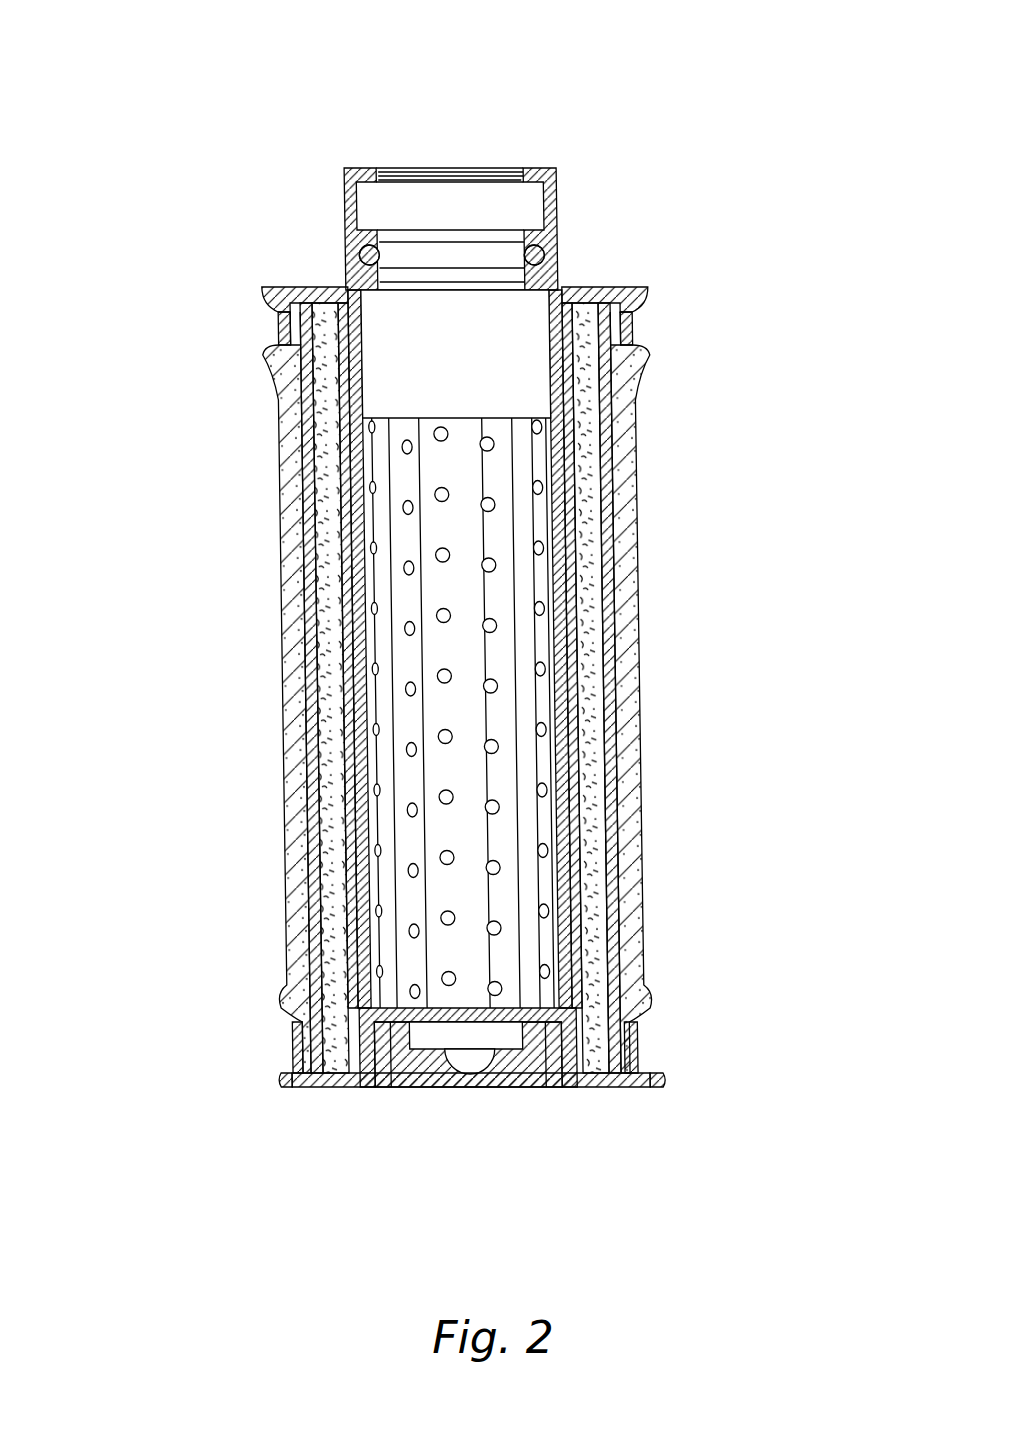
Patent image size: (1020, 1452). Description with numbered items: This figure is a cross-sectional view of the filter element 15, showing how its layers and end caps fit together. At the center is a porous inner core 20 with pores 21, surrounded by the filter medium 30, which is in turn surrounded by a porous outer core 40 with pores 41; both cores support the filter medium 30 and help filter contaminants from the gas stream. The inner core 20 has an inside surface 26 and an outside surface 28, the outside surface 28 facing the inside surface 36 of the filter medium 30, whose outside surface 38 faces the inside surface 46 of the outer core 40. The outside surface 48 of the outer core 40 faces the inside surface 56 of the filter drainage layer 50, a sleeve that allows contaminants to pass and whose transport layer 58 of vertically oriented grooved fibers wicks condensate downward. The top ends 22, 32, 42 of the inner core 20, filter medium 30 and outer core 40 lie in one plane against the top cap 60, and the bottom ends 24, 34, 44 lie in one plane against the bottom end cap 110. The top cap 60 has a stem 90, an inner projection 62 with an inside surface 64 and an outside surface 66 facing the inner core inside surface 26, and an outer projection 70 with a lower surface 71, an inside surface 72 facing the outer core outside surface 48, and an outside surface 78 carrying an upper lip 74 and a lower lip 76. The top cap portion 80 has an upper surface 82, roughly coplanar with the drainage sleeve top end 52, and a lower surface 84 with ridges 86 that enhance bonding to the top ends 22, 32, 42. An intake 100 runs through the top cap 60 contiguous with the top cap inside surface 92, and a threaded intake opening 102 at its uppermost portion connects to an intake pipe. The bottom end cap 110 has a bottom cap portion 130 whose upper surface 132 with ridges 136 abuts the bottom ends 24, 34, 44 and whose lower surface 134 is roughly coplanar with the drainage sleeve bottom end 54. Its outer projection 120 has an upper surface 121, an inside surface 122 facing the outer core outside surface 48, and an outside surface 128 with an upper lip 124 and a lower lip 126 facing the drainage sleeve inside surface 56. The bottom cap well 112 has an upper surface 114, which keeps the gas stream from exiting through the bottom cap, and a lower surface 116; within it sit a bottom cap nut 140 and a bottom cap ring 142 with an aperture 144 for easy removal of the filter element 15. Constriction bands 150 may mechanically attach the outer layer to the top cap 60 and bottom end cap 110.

The filter element 15 is at (684, 108).
The porous inner core 20 is at (577, 690).
The pores 21 is at (594, 885).
The top end of inner core 22 is at (578, 285).
The bottom end of inner core 24 is at (566, 1092).
The inside surface of inner core 26 is at (614, 490).
The outside surface of inner core 28 is at (590, 830).
The filter medium 30 is at (600, 420).
The top end of filter medium 32 is at (603, 290).
The bottom end of filter medium 34 is at (587, 1092).
The inside surface of filter medium 36 is at (623, 560).
The outside surface of filter medium 38 is at (606, 715).
The porous outer core 40 is at (308, 597).
The pores 41 is at (298, 410).
The top end of outer core 42 is at (625, 285).
The bottom end of outer core 44 is at (619, 1092).
The inside surface of outer core 46 is at (292, 690).
The outside surface of outer core 48 is at (313, 920).
The filter drainage layer 50 is at (631, 390).
The filter drainage sleeve top end 52 is at (275, 290).
The drainage sleeve bottom end 54 is at (289, 1092).
The drainage layer inside surface 56 is at (315, 520).
The transport layer 58 is at (294, 468).
The top cap 60 is at (562, 205).
The inner projection 62 is at (622, 320).
The inside surface of inner projection 64 is at (342, 320).
The outside surface of inner projection 66 is at (317, 372).
The outer projection 70 is at (642, 290).
The lower surface of outer projection 71 is at (547, 400).
The inside surface of outer projection 72 is at (651, 340).
The upper lip 74 is at (263, 293).
The lower lip 76 is at (299, 358).
The outside surface of outer projection 78 is at (283, 325).
The top cap portion 80 is at (320, 305).
The upper surface of top cap portion 82 is at (580, 282).
The lower surface of top cap portion 84 is at (300, 300).
The surface ridges 86 is at (375, 318).
The top cap stem 90 is at (355, 172).
The top cap inside surface 92 is at (555, 182).
The intake 100 is at (490, 192).
The threaded intake opening 102 is at (388, 172).
The bottom end cap 110 is at (311, 1092).
The bottom cap well 112 is at (361, 1092).
The bottom cap well upper surface 114 is at (379, 1088).
The bottom cap well lower surface 116 is at (517, 1092).
The outer projection of bottom cap 120 is at (286, 1080).
The upper surface of bottom cap outer projection 121 is at (618, 950).
The inside surface of bottom cap outer projection 122 is at (281, 1035).
The upper lip 124 is at (630, 992).
The lower lip 126 is at (641, 1085).
The outside surface of bottom cap outer projection 128 is at (630, 1022).
The bottom cap portion 130 is at (329, 1090).
The upper surface of bottom cap portion 132 is at (344, 1092).
The lower surface of bottom cap portion 134 is at (549, 1092).
The ridges 136 is at (279, 1065).
The bottom cap nut 140 is at (489, 1092).
The bottom cap ring 142 is at (429, 1092).
The aperture 144 is at (451, 1087).
The constriction bands 150 is at (634, 1050).